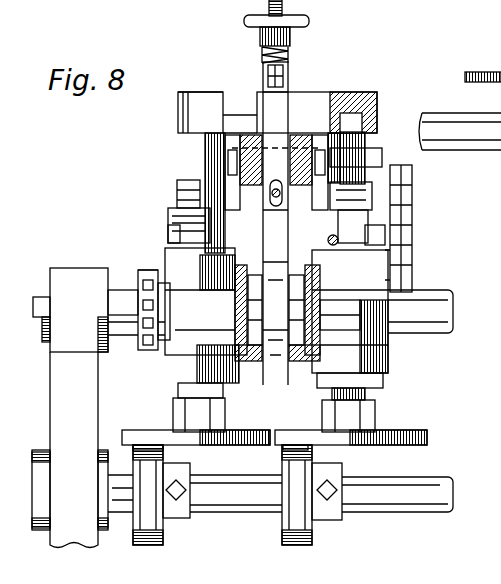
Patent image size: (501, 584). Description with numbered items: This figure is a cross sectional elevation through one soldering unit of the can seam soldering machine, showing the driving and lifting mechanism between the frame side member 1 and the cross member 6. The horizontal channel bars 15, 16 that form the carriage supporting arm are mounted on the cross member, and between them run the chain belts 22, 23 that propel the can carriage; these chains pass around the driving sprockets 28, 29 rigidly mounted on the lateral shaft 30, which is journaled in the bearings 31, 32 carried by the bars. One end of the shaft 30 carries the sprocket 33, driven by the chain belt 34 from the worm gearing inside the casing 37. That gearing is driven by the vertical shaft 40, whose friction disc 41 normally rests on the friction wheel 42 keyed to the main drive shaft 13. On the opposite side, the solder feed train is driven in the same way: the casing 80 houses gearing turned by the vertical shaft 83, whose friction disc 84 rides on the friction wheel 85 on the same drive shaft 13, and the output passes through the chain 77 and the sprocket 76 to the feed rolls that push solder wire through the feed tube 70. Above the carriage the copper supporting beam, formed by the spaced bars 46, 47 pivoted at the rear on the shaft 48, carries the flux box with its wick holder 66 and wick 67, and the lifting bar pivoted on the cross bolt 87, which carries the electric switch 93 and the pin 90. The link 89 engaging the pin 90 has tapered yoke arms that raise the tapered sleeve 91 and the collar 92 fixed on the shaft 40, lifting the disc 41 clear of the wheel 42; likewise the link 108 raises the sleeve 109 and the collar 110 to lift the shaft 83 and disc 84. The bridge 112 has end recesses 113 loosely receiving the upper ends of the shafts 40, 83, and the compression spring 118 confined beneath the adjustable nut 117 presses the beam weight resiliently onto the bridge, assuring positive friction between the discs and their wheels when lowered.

The side member 1 is at (53, 388).
The cross member 6 is at (437, 302).
The main drive shaft 13 is at (420, 506).
The channel shaped bar 15 is at (200, 335).
The channel shaped bar 16 is at (312, 318).
The chain belt 22 is at (253, 348).
The chain belt 23 is at (298, 348).
The driving sprocket 28 is at (185, 384).
The driving sprocket 29 is at (343, 322).
The shaft 30 is at (277, 360).
The bearing 31 is at (200, 290).
The bearing 32 is at (340, 318).
The sprocket 33 is at (138, 280).
The chain belt 34 is at (140, 342).
The casing 37 is at (157, 278).
The vertical shaft 40 is at (173, 404).
The friction disc 41 is at (234, 445).
The friction wheel 42 is at (163, 528).
The beam bar 46 is at (252, 130).
The beam bar 47 is at (285, 130).
The shaft 48 is at (378, 166).
The wick holder 66 is at (151, 0).
The wick 67 is at (181, 0).
The solder feed tube 70 is at (238, 186).
The sprocket 76 is at (404, 199).
The chain 77 is at (415, 248).
The casing 80 is at (412, 264).
The vertical shaft 83 is at (360, 148).
The friction disc 84 is at (430, 440).
The friction wheel 85 is at (283, 540).
The cross bolt 87 is at (248, 130).
The link 89 is at (190, 212).
The pin 90 is at (200, 215).
The tapered sleeve 91 is at (175, 235).
The collar 92 is at (266, 196).
The electric switch 93 is at (292, 130).
The link 108 is at (384, 232).
The tapered sleeve 109 is at (372, 220).
The collar 110 is at (402, 180).
The bridge 112 is at (322, 98).
The end recess 113 is at (375, 108).
The adjustable nut 117 is at (244, 22).
The compression spring 118 is at (288, 54).